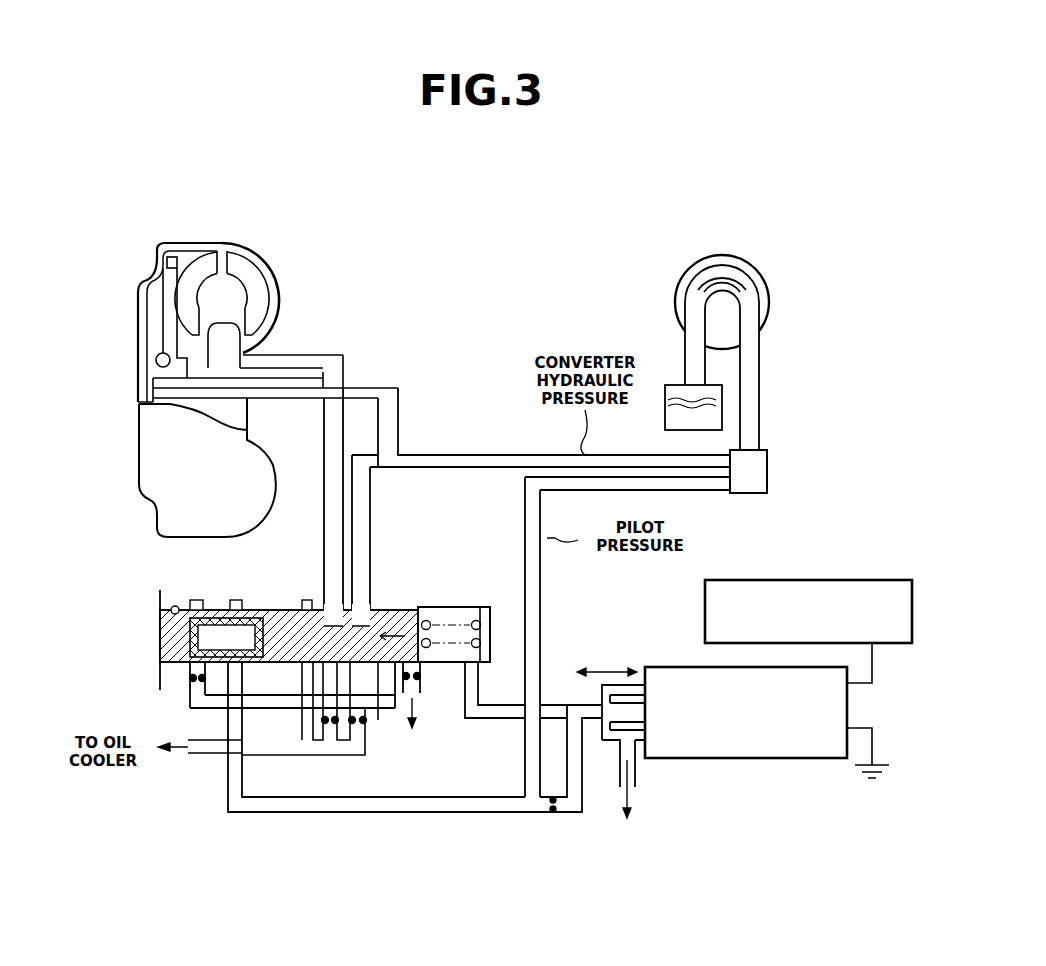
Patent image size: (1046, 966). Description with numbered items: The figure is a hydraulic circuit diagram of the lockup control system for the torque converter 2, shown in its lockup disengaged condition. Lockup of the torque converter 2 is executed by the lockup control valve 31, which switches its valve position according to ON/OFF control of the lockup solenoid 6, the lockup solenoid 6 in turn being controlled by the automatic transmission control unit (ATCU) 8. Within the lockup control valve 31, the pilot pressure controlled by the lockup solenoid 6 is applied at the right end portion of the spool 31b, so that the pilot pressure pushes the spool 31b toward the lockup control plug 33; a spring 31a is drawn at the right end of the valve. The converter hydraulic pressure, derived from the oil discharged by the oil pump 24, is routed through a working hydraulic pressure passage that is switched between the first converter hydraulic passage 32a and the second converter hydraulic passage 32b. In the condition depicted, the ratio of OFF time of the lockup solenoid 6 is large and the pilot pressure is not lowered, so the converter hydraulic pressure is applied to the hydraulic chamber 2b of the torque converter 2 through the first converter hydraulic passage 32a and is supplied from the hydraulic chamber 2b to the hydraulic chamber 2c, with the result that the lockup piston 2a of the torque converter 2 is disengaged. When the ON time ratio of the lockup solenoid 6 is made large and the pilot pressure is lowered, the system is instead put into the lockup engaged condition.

The torque converter 2 is at (258, 281).
The lockup piston 2a is at (173, 257).
The hydraulic chamber 2b is at (150, 318).
The hydraulic chamber 2c is at (228, 292).
The oil pump 24 is at (758, 270).
The lockup control valve 31 is at (331, 641).
The spring 31a is at (470, 605).
The spool 31b is at (428, 665).
The first converter hydraulic passage 32a is at (400, 415).
The second converter hydraulic passage 32b is at (348, 365).
The lockup control plug 33 is at (218, 612).
The lockup solenoid 6 is at (758, 758).
The automatic transmission control unit (ATCU) 8 is at (835, 580).